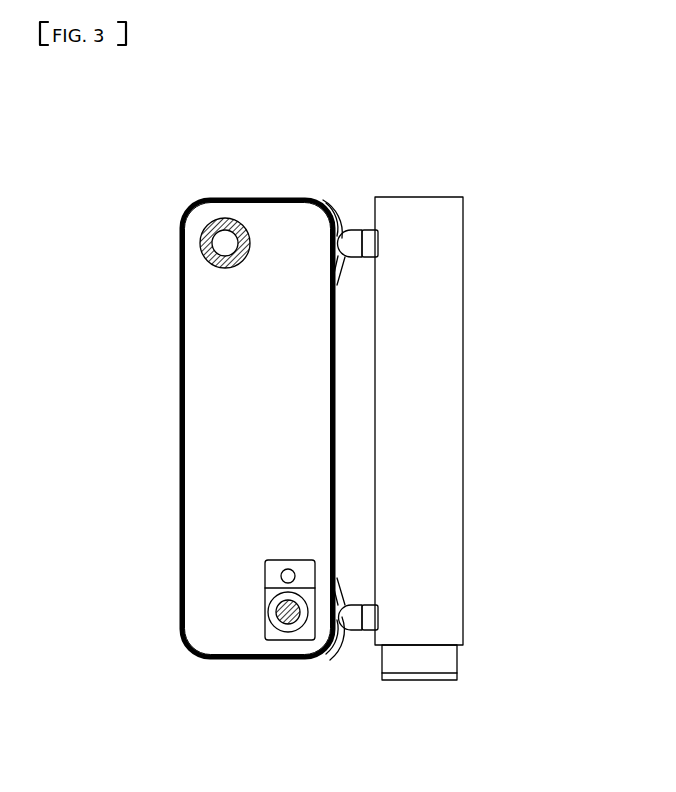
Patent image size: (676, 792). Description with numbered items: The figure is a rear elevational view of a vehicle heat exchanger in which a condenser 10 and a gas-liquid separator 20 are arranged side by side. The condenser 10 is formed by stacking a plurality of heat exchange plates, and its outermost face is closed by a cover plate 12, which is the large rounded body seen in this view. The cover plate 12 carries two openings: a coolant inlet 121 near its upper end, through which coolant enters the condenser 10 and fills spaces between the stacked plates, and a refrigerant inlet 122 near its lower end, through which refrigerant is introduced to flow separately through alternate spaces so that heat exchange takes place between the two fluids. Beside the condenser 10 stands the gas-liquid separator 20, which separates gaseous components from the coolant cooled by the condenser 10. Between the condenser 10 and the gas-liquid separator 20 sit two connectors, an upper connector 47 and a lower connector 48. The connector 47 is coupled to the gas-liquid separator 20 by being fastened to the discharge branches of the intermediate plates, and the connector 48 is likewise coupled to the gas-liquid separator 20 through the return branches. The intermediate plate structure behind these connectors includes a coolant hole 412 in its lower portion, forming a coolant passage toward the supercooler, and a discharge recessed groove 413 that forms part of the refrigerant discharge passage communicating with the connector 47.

The condenser 10 is at (265, 200).
The cover plate 12 is at (208, 572).
The coolant inlet 121 is at (220, 242).
The refrigerant inlet 122 is at (286, 616).
The gas-liquid separator 20 is at (443, 357).
The coolant hole 412 is at (353, 230).
The discharge recessed groove 413 is at (352, 630).
The connector 47 is at (365, 230).
The connector 48 is at (365, 630).